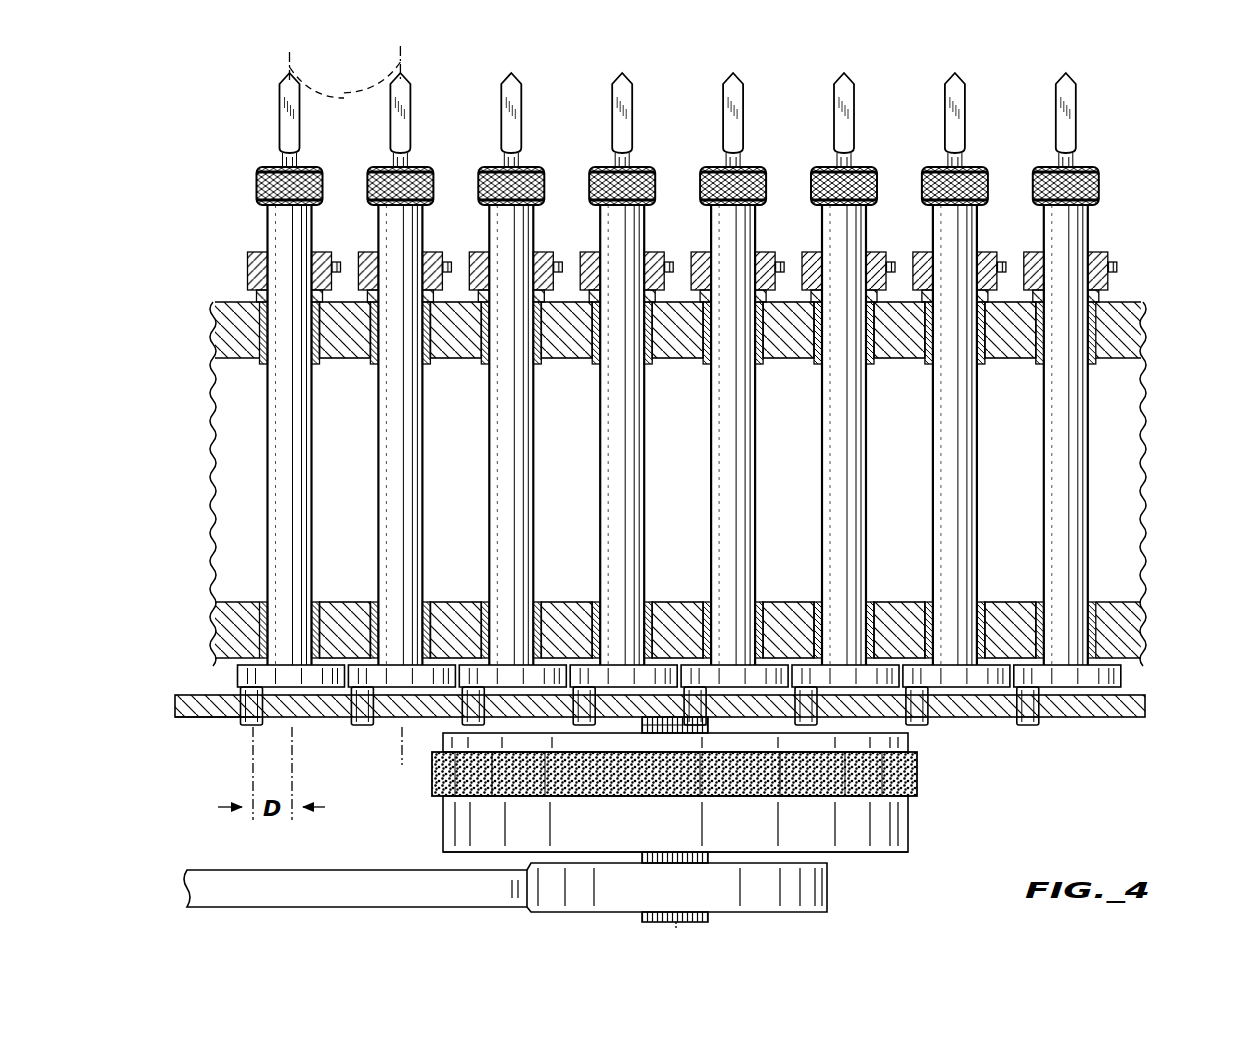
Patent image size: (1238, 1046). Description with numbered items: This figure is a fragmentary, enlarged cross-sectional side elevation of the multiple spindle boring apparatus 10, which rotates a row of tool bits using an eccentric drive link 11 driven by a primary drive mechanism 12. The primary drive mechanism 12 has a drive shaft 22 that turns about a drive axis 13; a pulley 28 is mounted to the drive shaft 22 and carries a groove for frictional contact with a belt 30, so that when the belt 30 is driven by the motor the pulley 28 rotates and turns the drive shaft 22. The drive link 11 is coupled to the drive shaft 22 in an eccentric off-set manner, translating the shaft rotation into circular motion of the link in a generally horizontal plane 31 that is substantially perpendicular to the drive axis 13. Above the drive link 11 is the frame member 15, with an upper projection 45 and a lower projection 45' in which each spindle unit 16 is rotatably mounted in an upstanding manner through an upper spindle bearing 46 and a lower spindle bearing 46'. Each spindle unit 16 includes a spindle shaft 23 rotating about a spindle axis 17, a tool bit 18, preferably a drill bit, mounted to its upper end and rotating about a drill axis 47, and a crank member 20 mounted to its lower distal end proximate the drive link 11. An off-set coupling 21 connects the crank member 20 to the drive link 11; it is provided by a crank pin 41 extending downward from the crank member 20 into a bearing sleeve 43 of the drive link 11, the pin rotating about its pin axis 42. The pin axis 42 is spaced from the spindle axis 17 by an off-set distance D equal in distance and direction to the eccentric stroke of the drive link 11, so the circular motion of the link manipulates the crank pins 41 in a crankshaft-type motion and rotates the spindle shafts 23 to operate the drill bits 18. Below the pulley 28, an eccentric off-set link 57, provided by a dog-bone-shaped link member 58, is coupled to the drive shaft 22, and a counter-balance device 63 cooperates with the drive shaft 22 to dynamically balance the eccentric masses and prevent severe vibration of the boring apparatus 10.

The boring apparatus 10 is at (1132, 127).
The eccentric drive link 11 is at (196, 719).
The primary drive mechanism 12 is at (1022, 781).
The drive axis 13 is at (680, 926).
The frame member 15 is at (1143, 306).
The spindle unit 16 is at (396, 523).
The spindle axis 17 is at (293, 740).
The tool bit 18 is at (281, 128).
The crank member 20 is at (238, 676).
The off-set coupling 21 is at (231, 736).
The drive shaft 22 is at (650, 929).
The spindle shaft 23 is at (395, 443).
The pulley 28 is at (908, 852).
The belt 30 is at (918, 772).
The horizontal plane 31 is at (1150, 698).
The crank pin 41 is at (912, 725).
The pin axis 42 is at (253, 745).
The bearing sleeve 43 is at (927, 722).
The upper projection 45 is at (251, 308).
The lower projection 45' is at (651, 614).
The upper spindle bearing 46 is at (607, 334).
The lower spindle bearing 46' is at (595, 603).
The drill axis 47 is at (345, 77).
The eccentric off-set link 57 is at (273, 909).
The link member 58 is at (401, 908).
The counter-balance device 63 is at (865, 853).